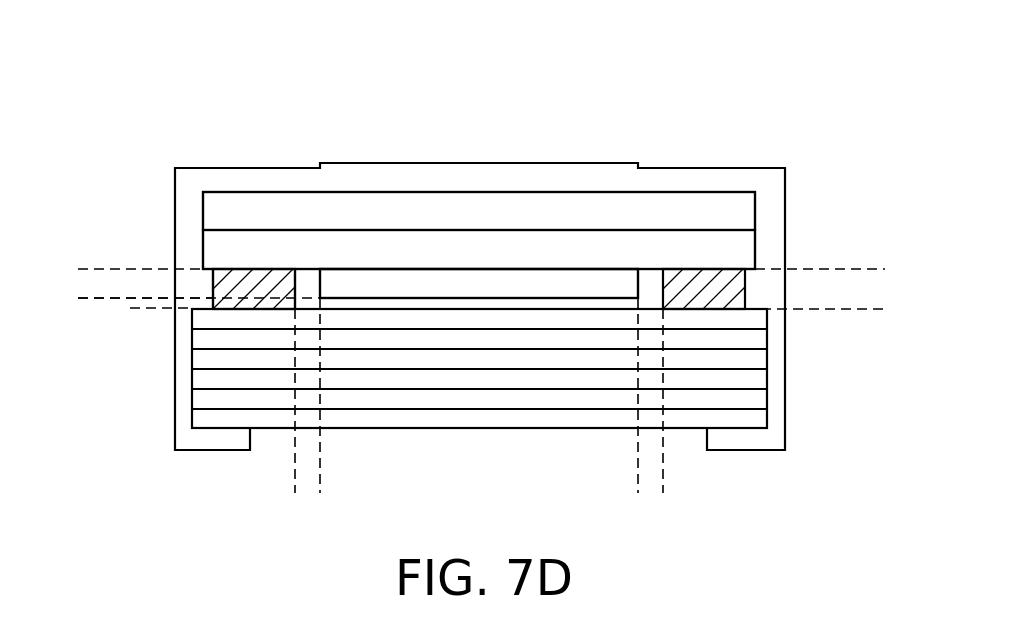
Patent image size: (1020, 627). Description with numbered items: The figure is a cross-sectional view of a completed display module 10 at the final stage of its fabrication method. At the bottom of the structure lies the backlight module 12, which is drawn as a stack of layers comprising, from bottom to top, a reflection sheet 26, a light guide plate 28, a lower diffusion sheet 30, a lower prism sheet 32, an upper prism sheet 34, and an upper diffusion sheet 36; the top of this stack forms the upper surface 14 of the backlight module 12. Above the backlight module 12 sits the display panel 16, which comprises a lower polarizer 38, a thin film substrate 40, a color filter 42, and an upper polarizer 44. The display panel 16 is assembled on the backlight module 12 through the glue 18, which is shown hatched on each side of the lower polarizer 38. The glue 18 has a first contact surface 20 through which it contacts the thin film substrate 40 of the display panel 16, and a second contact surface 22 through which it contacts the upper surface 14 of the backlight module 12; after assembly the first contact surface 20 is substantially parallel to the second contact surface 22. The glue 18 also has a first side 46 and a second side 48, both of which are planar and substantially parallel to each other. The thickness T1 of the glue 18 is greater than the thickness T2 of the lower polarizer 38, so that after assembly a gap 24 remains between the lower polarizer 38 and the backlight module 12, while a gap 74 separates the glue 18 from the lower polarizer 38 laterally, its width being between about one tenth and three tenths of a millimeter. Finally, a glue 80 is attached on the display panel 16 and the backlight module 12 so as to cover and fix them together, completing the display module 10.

The display module 10 is at (36, 73).
The backlight module 12 is at (556, 399).
The upper surface of the backlight module 14 is at (755, 307).
The display panel 16 is at (479, 167).
The glue 18 is at (262, 290).
The first contact surface 20 is at (227, 266).
The second contact surface 22 is at (232, 313).
The gap 24 is at (135, 278).
The reflection sheet 26 is at (528, 449).
The light guide plate 28 is at (752, 398).
The lower diffusion sheet 30 is at (752, 380).
The lower prism sheet 32 is at (752, 358).
The upper prism sheet 34 is at (752, 338).
The upper diffusion sheet 36 is at (752, 318).
The lower polarizer 38 is at (390, 88).
The thin film substrate 40 is at (520, 250).
The color filter 42 is at (463, 205).
The upper polarizer 44 is at (412, 177).
The first side 46 is at (211, 286).
The second side 48 is at (299, 280).
The gap 74 is at (255, 490).
The glue 80 is at (768, 180).
The thickness of the glue T1 is at (879, 269).
The thickness of the lower polarizer T2 is at (85, 230).